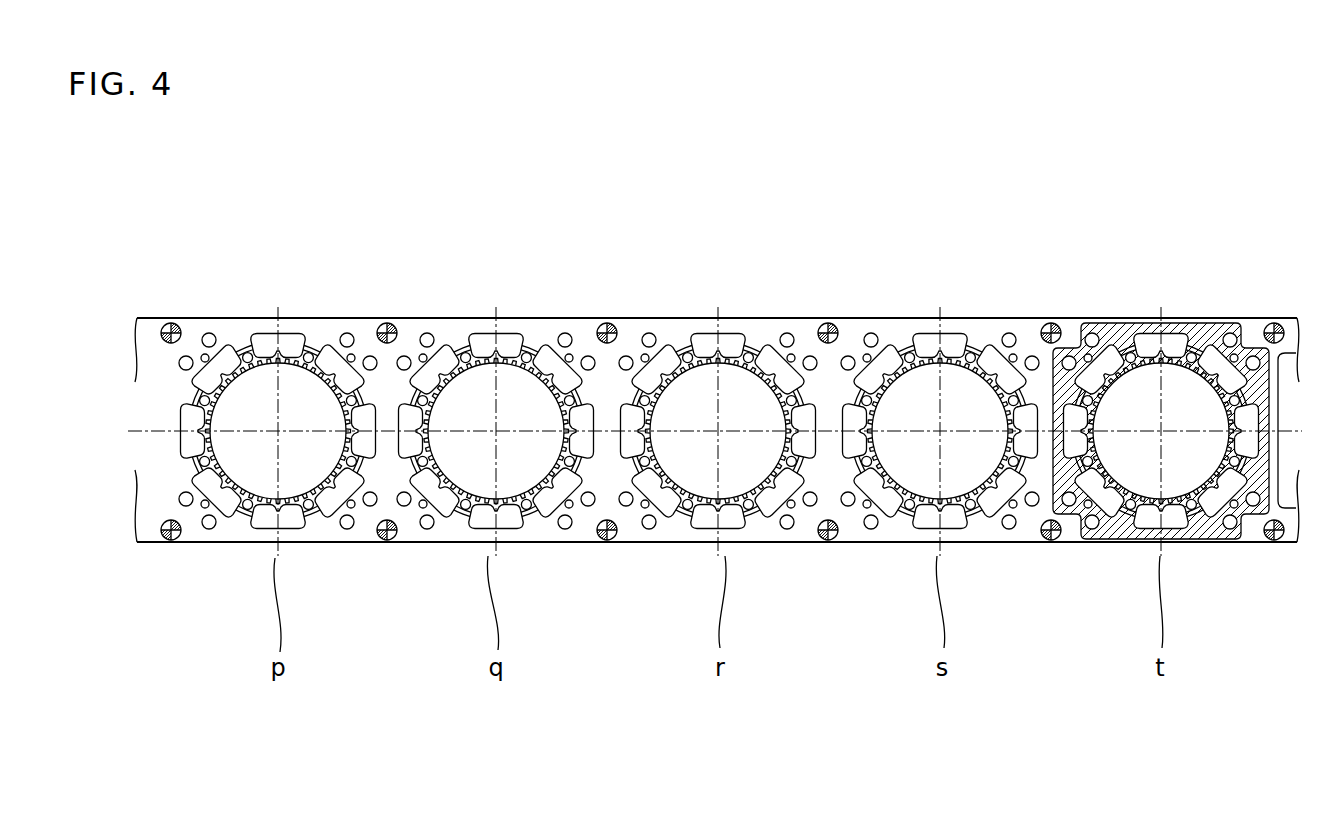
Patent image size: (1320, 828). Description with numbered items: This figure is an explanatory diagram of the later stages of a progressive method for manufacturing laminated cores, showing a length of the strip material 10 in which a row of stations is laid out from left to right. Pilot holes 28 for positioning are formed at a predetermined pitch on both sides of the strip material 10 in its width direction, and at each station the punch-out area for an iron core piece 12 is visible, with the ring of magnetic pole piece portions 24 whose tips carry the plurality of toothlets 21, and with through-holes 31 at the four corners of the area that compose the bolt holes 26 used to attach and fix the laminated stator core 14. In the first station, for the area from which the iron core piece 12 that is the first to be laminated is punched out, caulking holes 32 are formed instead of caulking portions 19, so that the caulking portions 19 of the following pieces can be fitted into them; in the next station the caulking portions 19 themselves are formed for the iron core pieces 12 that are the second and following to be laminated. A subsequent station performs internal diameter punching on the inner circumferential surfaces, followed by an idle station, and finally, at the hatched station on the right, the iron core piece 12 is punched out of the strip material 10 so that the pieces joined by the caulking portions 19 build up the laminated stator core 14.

The strip material 10 is at (238, 545).
The iron core piece 12 is at (1171, 383).
The laminated stator core 14 is at (1212, 330).
The caulking portion 19 is at (548, 500).
The toothlet 21 is at (700, 496).
The magnetic pole piece portion 24 is at (686, 512).
The bolt hole 26 is at (1253, 530).
The pilot hole 28 is at (171, 603).
The through-hole 31 is at (1163, 427).
The caulking hole 32 is at (318, 592).